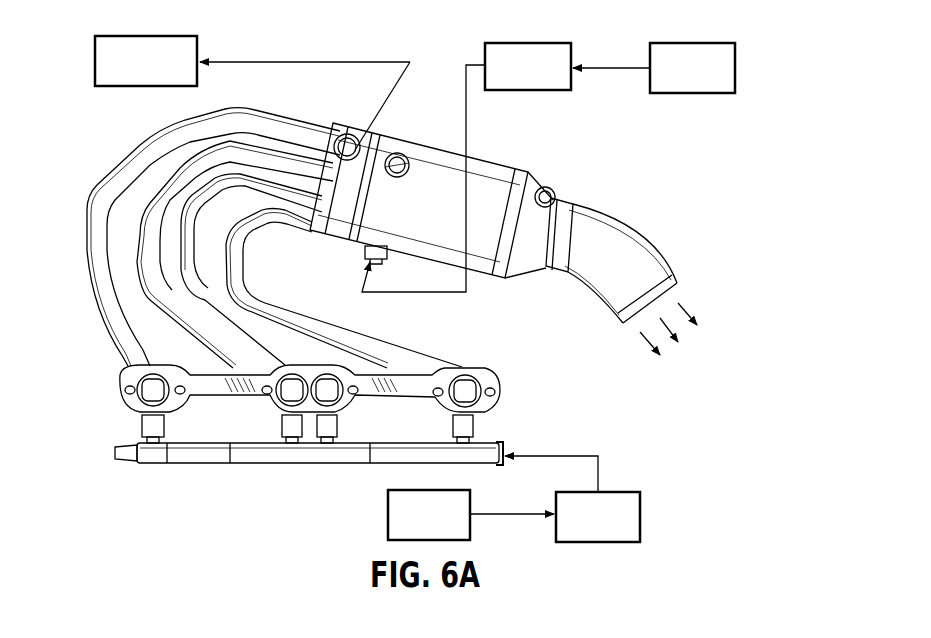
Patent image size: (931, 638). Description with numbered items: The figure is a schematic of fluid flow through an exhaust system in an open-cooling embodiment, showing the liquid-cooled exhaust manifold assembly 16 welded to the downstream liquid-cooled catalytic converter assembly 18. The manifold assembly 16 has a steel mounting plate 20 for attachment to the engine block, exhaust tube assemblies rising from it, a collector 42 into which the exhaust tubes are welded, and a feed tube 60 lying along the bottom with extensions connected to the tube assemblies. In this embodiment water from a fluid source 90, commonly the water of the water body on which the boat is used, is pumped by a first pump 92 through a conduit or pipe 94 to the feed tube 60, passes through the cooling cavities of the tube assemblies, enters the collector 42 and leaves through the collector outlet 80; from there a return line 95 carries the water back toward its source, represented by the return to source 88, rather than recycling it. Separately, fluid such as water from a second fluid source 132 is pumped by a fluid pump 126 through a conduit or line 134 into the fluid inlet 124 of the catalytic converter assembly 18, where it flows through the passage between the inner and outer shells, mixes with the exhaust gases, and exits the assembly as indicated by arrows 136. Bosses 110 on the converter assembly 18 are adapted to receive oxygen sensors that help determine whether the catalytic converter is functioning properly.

The liquid-cooled exhaust manifold assembly 16 is at (92, 203).
The liquid-cooled catalytic converter assembly 18 is at (480, 223).
The mounting plate 20 is at (126, 404).
The collector 42 is at (319, 237).
The feed tube 60 is at (371, 464).
The collector outlet 80 is at (337, 138).
The return to source 88 is at (155, 36).
The fluid source 90 is at (394, 541).
The first pump 92 is at (562, 542).
The conduit or pipe 94 is at (522, 512).
The return line 95 is at (268, 60).
The bosses 110 is at (553, 192).
The fluid inlet 124 is at (364, 265).
The fluid pump 126 is at (532, 43).
The fluid source 132 is at (673, 43).
The conduit or line 134 is at (467, 134).
The arrows 136 is at (652, 347).